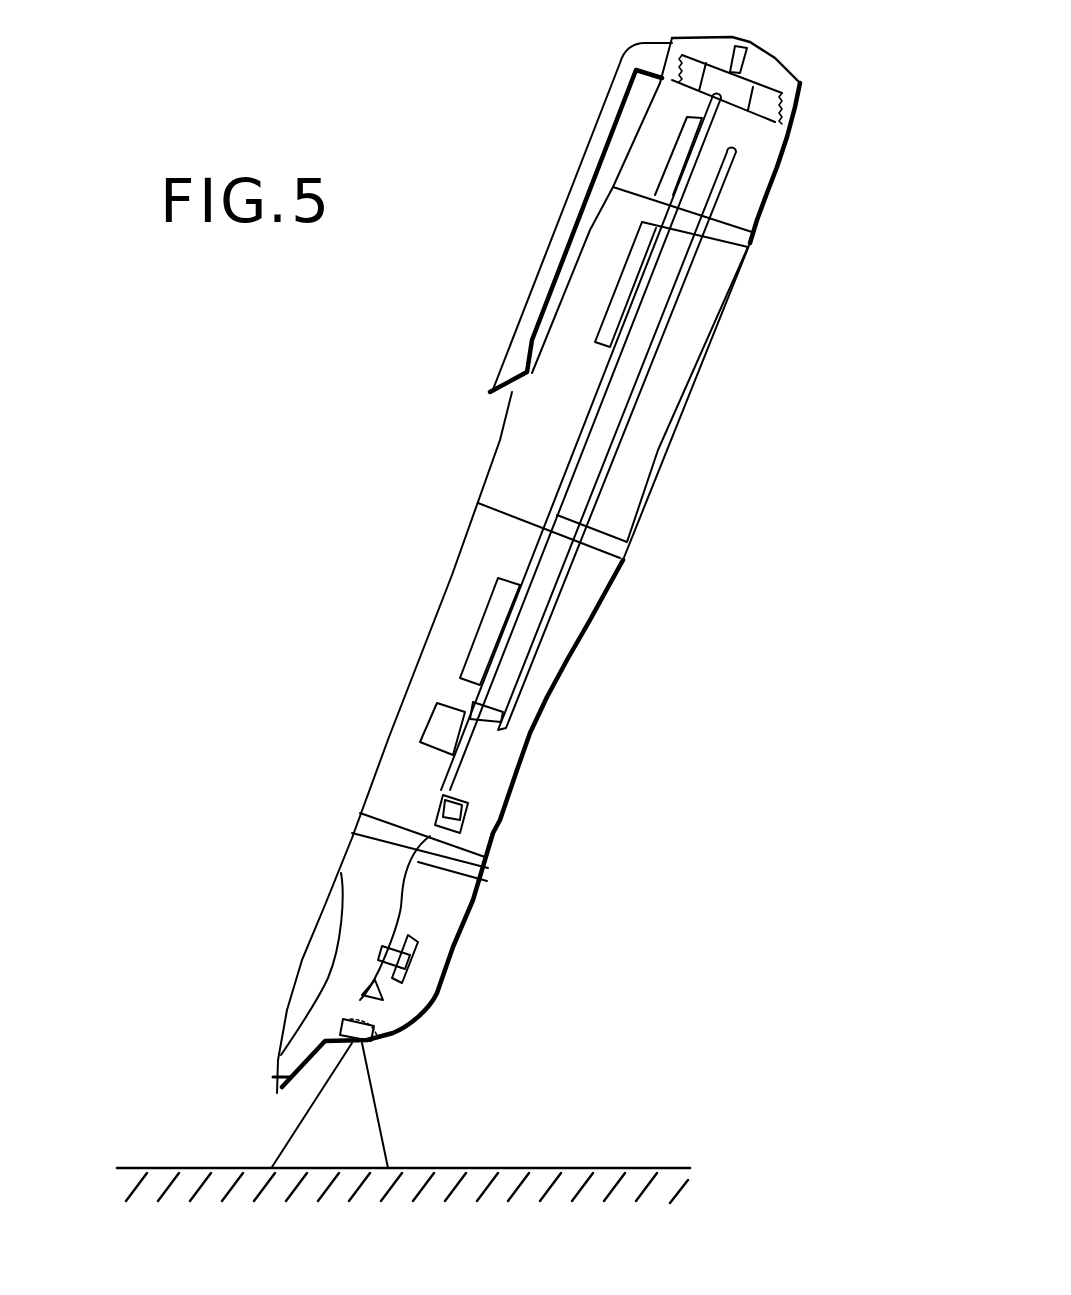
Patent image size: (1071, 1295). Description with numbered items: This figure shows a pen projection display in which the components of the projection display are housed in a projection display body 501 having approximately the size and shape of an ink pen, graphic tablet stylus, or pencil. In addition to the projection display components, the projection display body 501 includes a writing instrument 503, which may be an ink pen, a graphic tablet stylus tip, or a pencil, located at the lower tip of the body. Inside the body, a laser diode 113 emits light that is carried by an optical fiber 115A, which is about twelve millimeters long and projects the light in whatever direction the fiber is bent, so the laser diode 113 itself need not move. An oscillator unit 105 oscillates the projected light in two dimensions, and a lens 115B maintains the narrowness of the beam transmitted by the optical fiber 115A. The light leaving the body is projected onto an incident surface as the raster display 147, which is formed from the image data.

The projection display body 501 is at (390, 737).
The writing instrument 503 is at (278, 1080).
The laser diode 113 is at (475, 830).
The optical fiber 115A is at (400, 912).
The oscillator unit 105 is at (407, 980).
The lens 115B is at (378, 1042).
The raster display 147 is at (333, 1168).